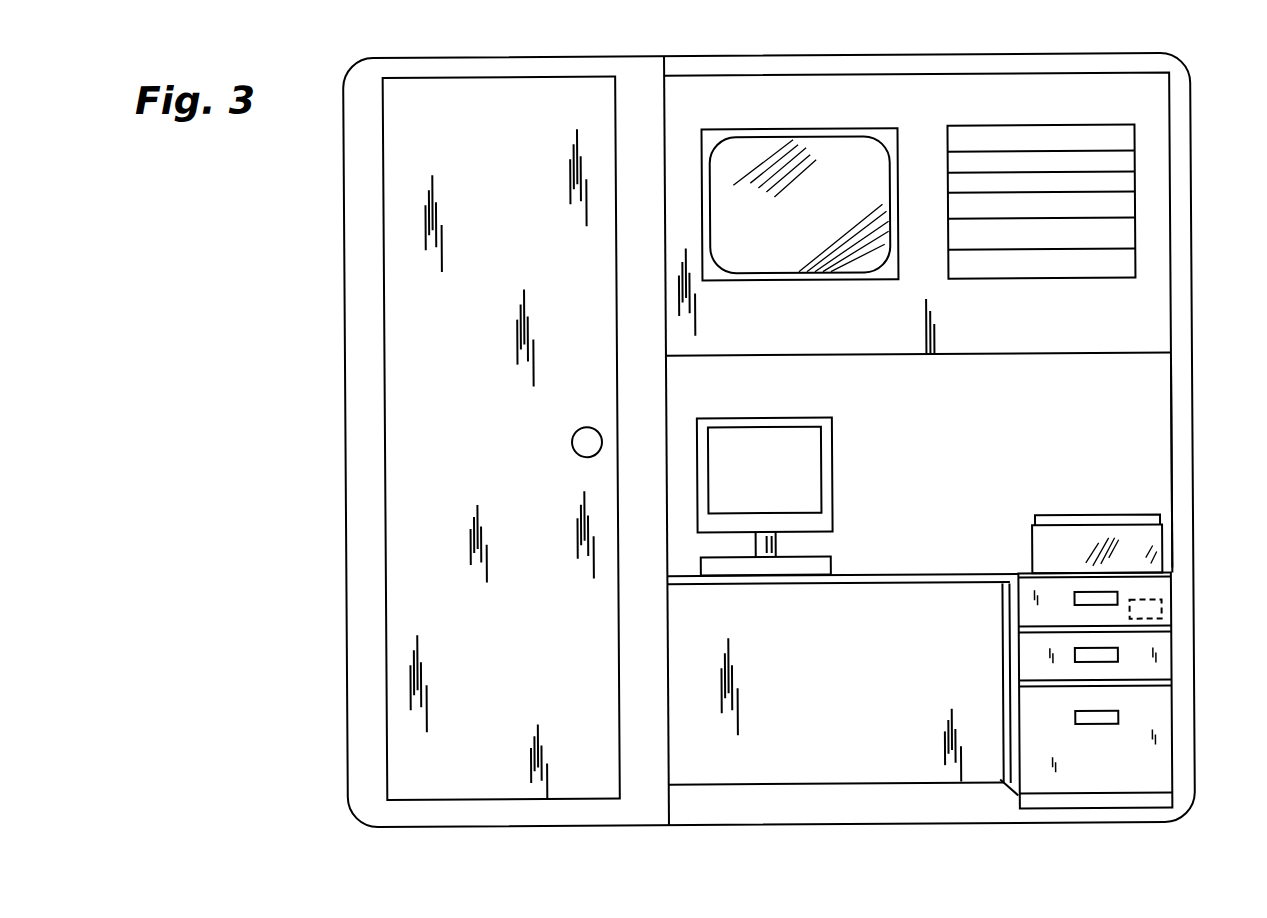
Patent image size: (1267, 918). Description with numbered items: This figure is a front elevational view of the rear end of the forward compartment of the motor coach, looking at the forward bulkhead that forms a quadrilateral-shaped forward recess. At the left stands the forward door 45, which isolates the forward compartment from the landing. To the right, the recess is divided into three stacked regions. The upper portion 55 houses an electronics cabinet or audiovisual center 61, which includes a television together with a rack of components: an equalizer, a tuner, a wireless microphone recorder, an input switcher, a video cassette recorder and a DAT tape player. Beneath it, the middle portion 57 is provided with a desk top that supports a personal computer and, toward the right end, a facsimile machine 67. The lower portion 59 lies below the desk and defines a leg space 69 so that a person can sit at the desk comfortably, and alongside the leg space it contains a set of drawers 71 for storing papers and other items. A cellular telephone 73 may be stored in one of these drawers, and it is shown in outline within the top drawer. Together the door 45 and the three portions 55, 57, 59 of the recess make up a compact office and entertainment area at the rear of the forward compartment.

The forward door 45 is at (385, 206).
The upper portion 55 is at (1174, 128).
The middle portion 57 is at (1172, 418).
The lower portion 59 is at (1173, 744).
The audiovisual center 61 is at (1096, 94).
The facsimile machine 67 is at (1160, 550).
The leg space 69 is at (750, 765).
The set of drawers 71 is at (1010, 789).
The cellular telephone 73 is at (1164, 614).